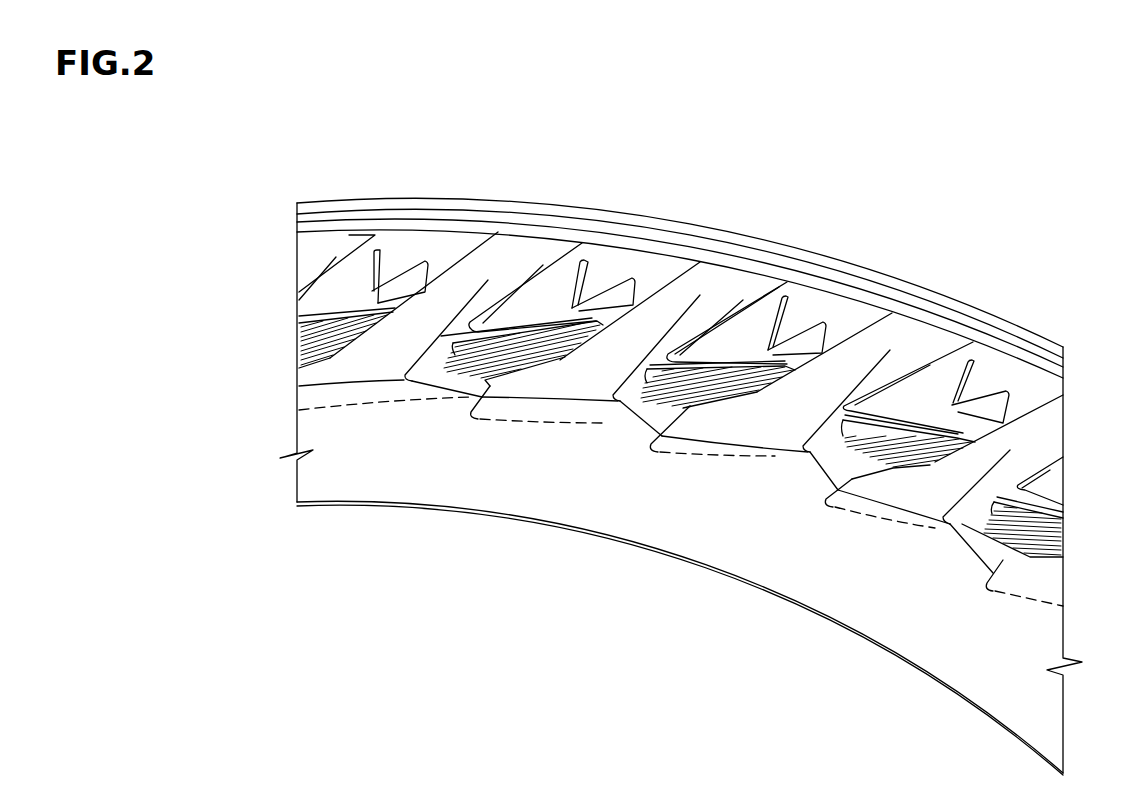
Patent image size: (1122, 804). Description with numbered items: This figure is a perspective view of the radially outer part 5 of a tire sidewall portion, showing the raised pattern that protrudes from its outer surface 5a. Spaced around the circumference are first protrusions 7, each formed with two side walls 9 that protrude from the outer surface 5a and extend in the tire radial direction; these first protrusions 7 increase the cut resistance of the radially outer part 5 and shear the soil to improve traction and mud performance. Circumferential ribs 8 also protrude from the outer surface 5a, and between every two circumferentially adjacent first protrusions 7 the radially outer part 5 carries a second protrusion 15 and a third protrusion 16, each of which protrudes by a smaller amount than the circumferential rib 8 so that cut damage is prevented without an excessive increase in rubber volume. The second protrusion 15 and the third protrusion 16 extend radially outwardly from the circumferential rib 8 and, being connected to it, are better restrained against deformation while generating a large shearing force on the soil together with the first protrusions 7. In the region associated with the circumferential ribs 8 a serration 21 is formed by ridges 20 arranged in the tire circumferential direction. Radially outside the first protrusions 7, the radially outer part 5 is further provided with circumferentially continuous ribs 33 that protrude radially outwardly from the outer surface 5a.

The radially outer part 5 is at (922, 217).
The outer surface 5a is at (912, 595).
The first protrusion 7 is at (513, 250).
The circumferential rib 8 is at (452, 381).
The side wall 9 is at (463, 248).
The second protrusion 15 is at (748, 330).
The third protrusion 16 is at (802, 340).
The ridge 20 is at (646, 476).
The serration 21 is at (828, 462).
The circumferentially continuous rib 33 is at (1012, 340).